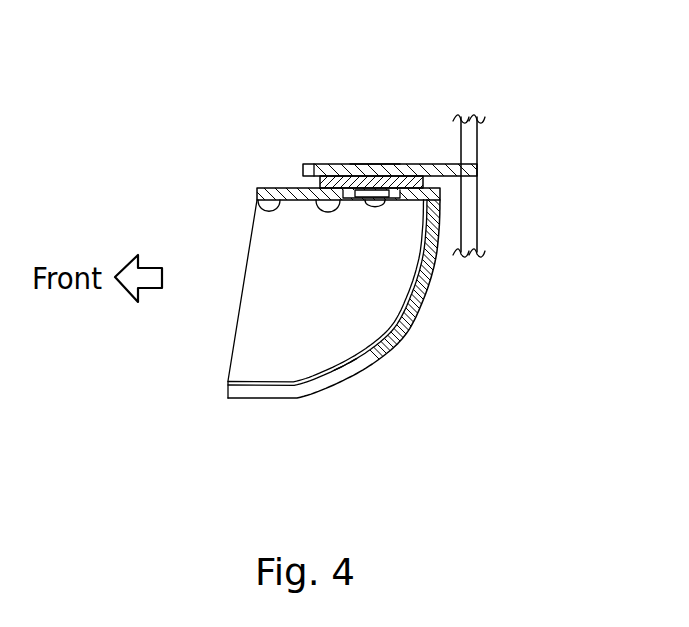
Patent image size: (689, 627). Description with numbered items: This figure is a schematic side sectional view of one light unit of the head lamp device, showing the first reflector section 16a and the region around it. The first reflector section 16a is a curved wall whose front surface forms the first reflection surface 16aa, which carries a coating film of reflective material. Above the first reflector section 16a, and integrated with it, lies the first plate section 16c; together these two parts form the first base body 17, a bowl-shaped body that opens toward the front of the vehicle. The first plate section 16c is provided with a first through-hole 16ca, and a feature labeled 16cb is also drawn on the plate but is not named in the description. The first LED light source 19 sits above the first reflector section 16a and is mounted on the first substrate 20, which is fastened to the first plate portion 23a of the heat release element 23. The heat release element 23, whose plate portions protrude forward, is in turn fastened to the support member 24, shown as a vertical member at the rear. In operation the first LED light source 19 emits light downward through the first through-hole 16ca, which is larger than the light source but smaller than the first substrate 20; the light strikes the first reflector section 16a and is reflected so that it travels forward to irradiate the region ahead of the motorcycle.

The first reflector section 16a is at (400, 335).
The first reflection surface 16aa is at (345, 356).
The first plate section 16c is at (273, 188).
The first through-hole 16ca is at (316, 198).
The engaging projection of upper plate 16cb is at (257, 203).
The first base body 17 is at (433, 280).
The first LED light source 19 is at (373, 194).
The first substrate 20 is at (337, 176).
The heat release element 23 is at (408, 164).
The first plate portion 23a is at (373, 164).
The support member 24 is at (477, 133).